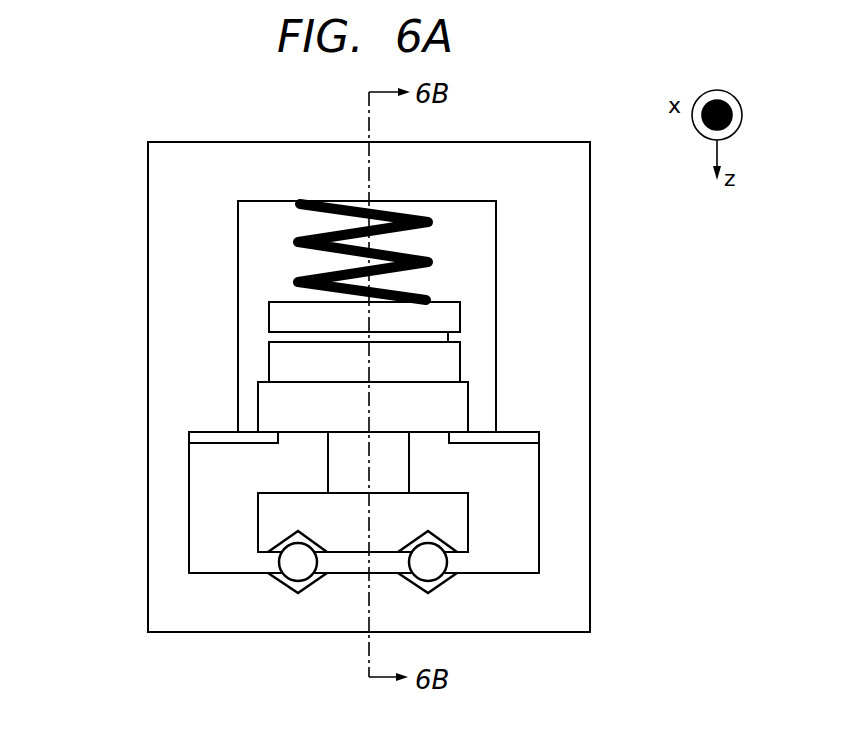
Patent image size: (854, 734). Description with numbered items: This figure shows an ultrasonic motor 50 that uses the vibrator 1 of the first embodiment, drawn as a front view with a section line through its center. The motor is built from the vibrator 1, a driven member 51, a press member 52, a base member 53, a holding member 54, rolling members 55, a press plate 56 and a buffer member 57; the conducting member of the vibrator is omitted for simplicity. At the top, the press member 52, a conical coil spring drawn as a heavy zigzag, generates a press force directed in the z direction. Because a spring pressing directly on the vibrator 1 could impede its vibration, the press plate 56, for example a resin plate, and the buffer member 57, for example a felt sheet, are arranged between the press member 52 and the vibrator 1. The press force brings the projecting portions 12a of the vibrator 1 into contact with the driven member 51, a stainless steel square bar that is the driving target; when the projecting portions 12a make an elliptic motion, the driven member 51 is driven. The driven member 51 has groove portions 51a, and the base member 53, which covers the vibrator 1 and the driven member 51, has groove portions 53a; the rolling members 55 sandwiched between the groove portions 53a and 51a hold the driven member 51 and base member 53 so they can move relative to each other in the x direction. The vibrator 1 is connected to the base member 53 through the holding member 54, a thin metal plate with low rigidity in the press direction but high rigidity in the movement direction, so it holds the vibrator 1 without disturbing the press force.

The ultrasonic motor 50 is at (88, 172).
The press member 52 is at (298, 240).
The press plate 56 is at (269, 316).
The buffer member 57 is at (448, 337).
The vibrator 1 is at (269, 356).
The holding member 54 is at (189, 437).
The projecting portions 12a is at (410, 465).
The driven member 51 is at (258, 497).
The groove portions 51a is at (284, 541).
The rolling members 55 is at (279, 562).
The base member 53 is at (148, 603).
The groove portions 53a is at (452, 583).